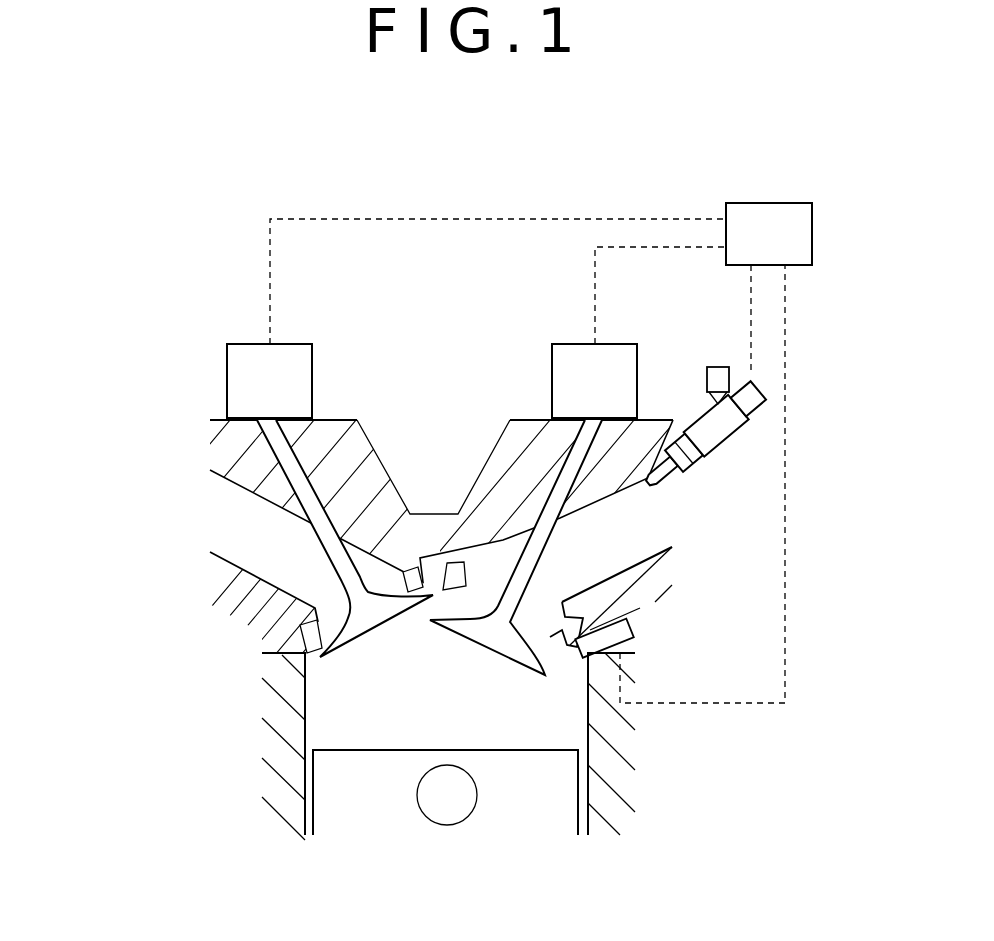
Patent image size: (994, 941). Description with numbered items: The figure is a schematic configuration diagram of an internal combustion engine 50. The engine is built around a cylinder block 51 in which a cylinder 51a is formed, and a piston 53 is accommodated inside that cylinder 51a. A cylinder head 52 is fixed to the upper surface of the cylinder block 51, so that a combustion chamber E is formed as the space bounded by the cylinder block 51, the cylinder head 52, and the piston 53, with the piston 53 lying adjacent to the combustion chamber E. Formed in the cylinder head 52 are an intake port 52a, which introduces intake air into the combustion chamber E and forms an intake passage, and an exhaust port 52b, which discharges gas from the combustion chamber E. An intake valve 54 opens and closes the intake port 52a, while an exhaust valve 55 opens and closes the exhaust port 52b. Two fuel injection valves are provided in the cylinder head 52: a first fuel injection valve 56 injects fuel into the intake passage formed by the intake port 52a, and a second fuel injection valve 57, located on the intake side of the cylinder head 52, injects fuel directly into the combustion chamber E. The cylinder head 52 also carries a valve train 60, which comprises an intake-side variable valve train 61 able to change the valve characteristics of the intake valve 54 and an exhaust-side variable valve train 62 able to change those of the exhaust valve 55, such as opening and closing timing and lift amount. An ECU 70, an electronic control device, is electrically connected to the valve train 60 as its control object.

The internal combustion engine 50 is at (145, 393).
The cylinder block 51 is at (290, 729).
The cylinder 51a is at (307, 767).
The cylinder head 52 is at (232, 447).
The intake port 52a is at (650, 553).
The exhaust port 52b is at (233, 557).
The piston 53 is at (568, 795).
The intake valve 54 is at (547, 520).
The exhaust valve 55 is at (322, 521).
The first fuel injection valve 56 is at (702, 425).
The second fuel injection valve 57 is at (622, 630).
The valve train 60 is at (535, 264).
The intake-side variable valve train 61 is at (570, 343).
The exhaust-side variable valve train 62 is at (297, 344).
The ECU 70 is at (812, 232).
The combustion chamber E is at (540, 713).